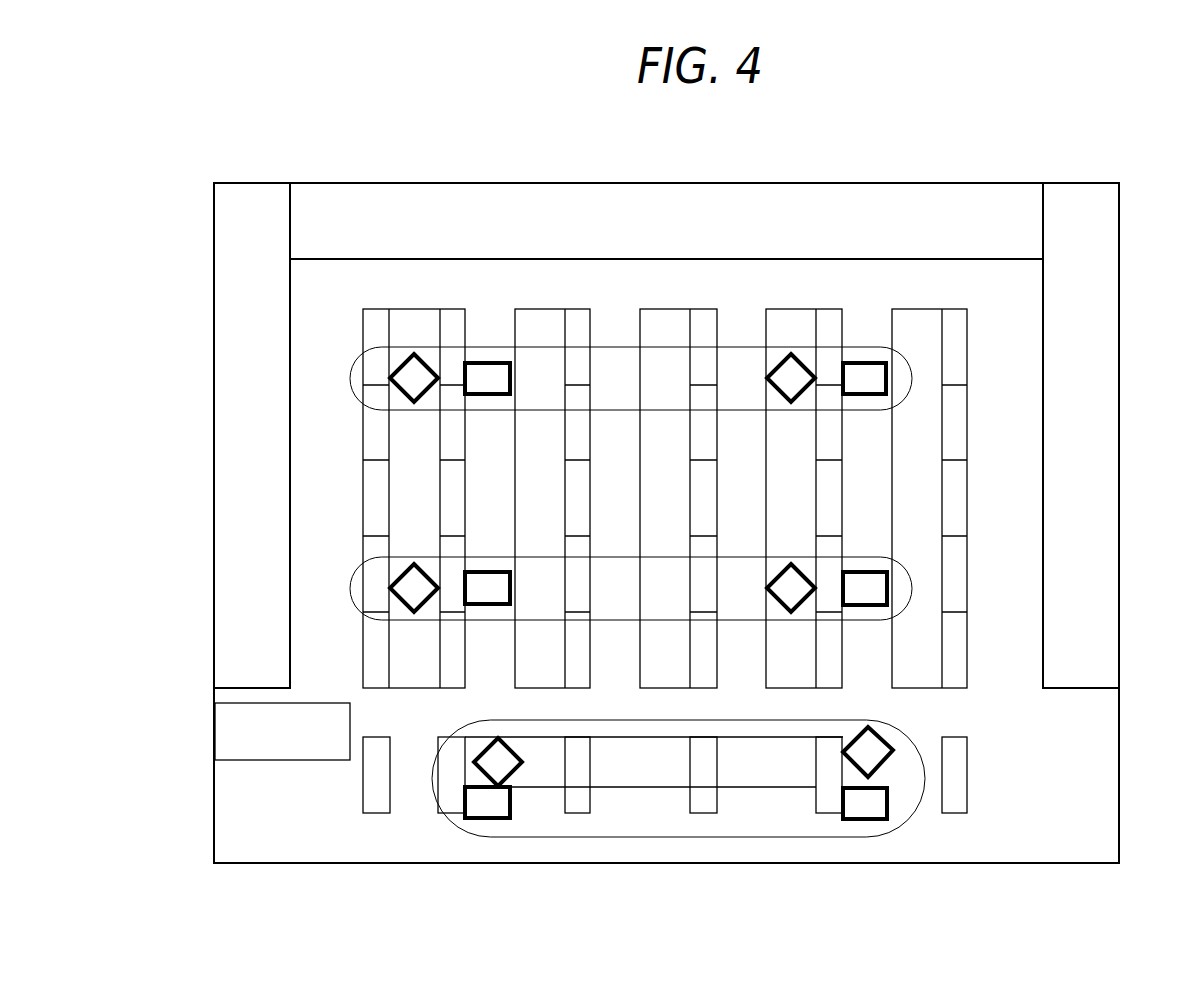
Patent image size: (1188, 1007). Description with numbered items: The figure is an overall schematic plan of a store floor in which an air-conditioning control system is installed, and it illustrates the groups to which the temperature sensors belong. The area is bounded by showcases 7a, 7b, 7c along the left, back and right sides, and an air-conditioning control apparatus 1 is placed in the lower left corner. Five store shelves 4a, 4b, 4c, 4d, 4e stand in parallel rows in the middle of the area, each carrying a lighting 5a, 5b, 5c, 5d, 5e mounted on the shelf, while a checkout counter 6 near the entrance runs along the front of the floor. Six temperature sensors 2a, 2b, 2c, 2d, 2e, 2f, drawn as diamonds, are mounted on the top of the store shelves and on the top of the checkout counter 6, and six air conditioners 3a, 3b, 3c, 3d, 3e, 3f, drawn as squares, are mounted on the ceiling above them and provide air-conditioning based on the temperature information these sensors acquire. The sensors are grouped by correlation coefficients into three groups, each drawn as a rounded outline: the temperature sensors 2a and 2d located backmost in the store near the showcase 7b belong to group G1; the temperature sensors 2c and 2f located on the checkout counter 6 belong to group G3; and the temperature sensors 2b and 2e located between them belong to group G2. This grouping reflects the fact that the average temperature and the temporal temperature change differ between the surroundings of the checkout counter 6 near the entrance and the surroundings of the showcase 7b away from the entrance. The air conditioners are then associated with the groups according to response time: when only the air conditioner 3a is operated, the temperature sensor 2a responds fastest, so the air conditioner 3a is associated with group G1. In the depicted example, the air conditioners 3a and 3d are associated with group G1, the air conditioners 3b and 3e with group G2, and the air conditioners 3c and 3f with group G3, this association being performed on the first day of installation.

The air-conditioning control apparatus 1 is at (283, 763).
The temperature sensor 2a is at (413, 357).
The temperature sensor 2b is at (414, 569).
The temperature sensor 2c is at (503, 756).
The temperature sensor 2d is at (790, 359).
The temperature sensor 2e is at (791, 569).
The temperature sensor 2f is at (875, 745).
The air conditioner 3a is at (485, 371).
The air conditioner 3b is at (486, 580).
The air conditioner 3c is at (502, 806).
The air conditioner 3d is at (860, 372).
The air conditioner 3e is at (863, 580).
The air conditioner 3f is at (878, 808).
The store shelf 4a is at (413, 482).
The store shelf 4b is at (534, 468).
The store shelf 4c is at (660, 468).
The store shelf 4d is at (782, 468).
The store shelf 4e is at (907, 468).
The lighting 5a is at (373, 414).
The lighting 5b is at (578, 432).
The lighting 5c is at (703, 435).
The lighting 5d is at (828, 435).
The lighting 5e is at (957, 435).
The checkout counter 6 is at (645, 773).
The showcase 7a is at (238, 460).
The showcase 7b is at (666, 213).
The showcase 7c is at (1085, 432).
The group G1 is at (612, 342).
The group G2 is at (612, 552).
The group G3 is at (622, 712).